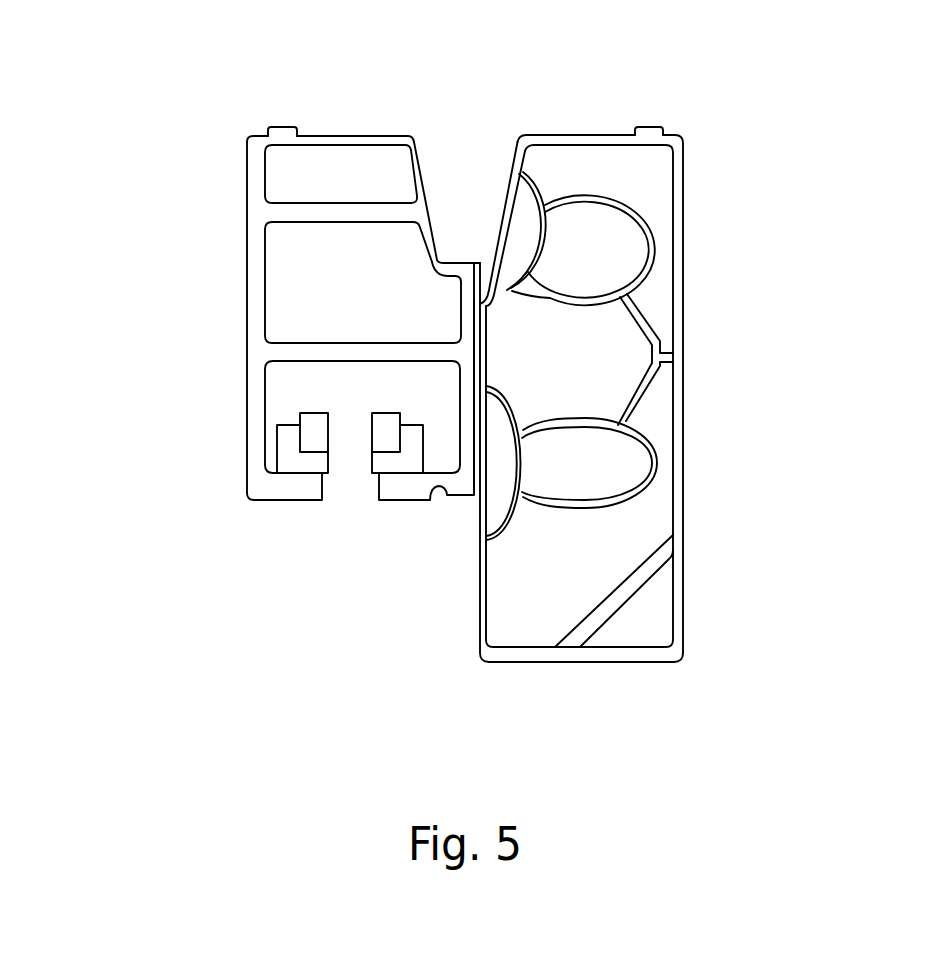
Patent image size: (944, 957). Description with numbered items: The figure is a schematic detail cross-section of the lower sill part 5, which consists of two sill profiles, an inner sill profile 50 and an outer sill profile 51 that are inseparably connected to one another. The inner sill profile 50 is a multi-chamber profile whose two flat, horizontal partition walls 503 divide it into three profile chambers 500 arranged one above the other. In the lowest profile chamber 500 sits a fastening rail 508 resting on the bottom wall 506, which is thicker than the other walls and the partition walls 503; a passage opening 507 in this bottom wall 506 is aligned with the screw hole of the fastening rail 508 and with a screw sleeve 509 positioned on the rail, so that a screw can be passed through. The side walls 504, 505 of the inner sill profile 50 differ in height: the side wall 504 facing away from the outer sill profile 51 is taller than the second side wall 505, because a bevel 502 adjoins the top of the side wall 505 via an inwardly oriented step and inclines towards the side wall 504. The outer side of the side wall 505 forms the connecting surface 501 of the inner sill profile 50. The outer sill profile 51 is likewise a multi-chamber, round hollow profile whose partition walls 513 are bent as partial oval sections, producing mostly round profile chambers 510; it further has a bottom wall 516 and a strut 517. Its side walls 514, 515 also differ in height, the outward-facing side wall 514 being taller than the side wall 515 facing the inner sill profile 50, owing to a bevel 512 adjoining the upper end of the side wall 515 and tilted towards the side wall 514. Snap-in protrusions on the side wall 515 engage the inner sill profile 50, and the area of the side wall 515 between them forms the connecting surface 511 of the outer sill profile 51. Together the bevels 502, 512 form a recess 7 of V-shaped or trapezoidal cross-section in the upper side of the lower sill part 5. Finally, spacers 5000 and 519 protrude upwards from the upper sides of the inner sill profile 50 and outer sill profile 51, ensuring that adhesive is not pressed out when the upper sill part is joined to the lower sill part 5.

The lower sill part 5 is at (202, 150).
The spacer 5000 is at (283, 126).
The recess 7 is at (467, 155).
The inner sill profile 50 is at (200, 308).
The outer sill profile 51 is at (722, 172).
The profile chamber 500 is at (352, 187).
The connecting surface 501 is at (476, 323).
The bevel 502 is at (420, 152).
The partition wall 503 is at (313, 215).
The side wall 504 is at (250, 265).
The side wall 505 is at (465, 292).
The bottom wall 506 is at (288, 493).
The passage opening 507 is at (378, 483).
The fastening rail 508 is at (288, 455).
The screw sleeve 509 is at (313, 427).
The profile chamber 510 is at (568, 261).
The connecting surface 511 is at (480, 348).
The bevel 512 is at (508, 180).
The partition walls 513 is at (640, 210).
The side wall 514 is at (684, 270).
The side wall 515 is at (478, 600).
The bottom wall 516 is at (518, 655).
The strut 517 is at (607, 606).
The spacer 519 is at (650, 126).